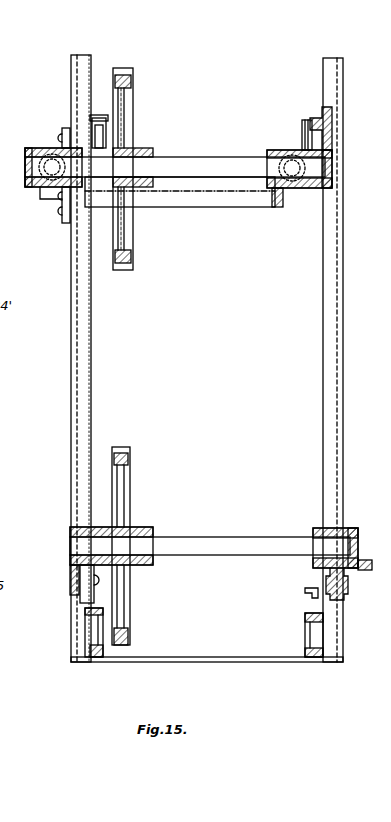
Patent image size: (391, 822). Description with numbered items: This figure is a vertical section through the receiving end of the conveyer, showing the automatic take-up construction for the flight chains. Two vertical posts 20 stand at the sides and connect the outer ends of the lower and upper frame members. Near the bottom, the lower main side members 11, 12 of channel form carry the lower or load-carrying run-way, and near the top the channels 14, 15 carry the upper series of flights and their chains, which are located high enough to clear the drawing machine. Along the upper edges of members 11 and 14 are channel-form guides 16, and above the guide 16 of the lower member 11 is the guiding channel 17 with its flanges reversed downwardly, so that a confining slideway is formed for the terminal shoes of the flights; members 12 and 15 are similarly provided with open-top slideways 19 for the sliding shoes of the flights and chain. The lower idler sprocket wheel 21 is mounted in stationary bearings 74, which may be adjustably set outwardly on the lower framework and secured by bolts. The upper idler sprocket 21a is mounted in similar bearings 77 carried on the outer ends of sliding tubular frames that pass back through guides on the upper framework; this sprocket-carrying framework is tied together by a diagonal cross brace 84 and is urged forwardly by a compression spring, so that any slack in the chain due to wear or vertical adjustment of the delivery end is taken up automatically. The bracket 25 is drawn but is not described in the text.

The main side member 11 is at (310, 637).
The main side member 12 is at (95, 636).
The channel 14 is at (310, 138).
The channel 15 is at (107, 141).
The guide 16 is at (313, 122).
The guiding channel 17 is at (305, 594).
The slideway 19 is at (92, 118).
The vertical post 20 is at (78, 356).
The lower idler sprocket wheel 21 is at (125, 473).
The upper idler sprocket 21a is at (131, 80).
The bracket 25 is at (90, 594).
The stationary bearing 74 is at (87, 527).
The bearing 77 is at (33, 189).
The diagonal cross brace 84 is at (212, 198).